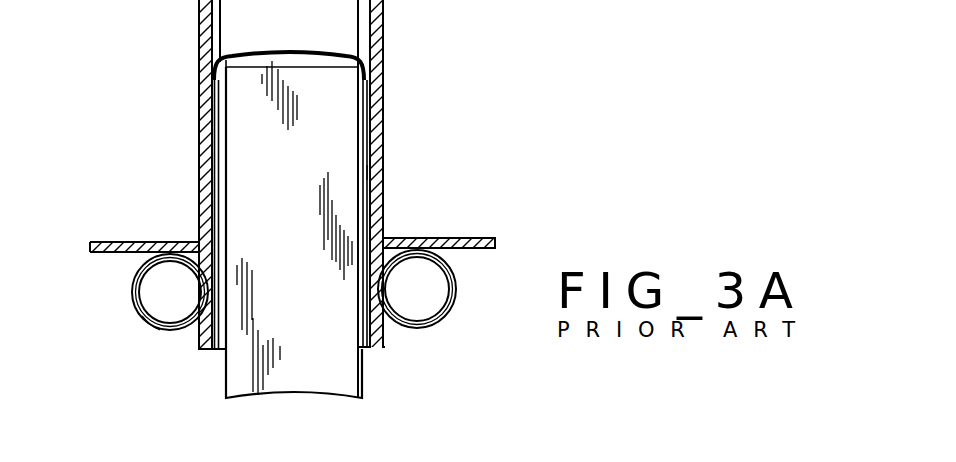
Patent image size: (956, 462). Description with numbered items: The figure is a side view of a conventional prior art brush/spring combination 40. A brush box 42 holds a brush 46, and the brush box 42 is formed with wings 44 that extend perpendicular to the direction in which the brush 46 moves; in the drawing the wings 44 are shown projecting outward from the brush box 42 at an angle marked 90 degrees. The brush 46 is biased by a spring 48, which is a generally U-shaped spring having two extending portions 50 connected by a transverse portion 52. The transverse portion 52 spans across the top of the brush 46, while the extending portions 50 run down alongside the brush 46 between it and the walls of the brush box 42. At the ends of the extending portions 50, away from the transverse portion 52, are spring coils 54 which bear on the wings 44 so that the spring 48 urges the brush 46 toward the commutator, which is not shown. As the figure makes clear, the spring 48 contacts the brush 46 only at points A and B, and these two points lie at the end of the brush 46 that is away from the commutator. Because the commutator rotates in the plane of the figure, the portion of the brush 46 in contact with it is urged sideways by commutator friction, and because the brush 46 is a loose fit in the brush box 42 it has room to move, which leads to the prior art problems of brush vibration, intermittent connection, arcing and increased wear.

The brush/spring combination 40 is at (397, 148).
The brush box 42 is at (200, 125).
The wings 44 is at (110, 242).
The brush 46 is at (333, 113).
The spring 48 is at (155, 325).
The extending portions 50 is at (212, 167).
The transverse portion 52 is at (284, 52).
The spring coils 54 is at (133, 290).
The 90 degree angle 90 is at (200, 178).
The contact point A is at (225, 70).
The contact point B is at (351, 70).